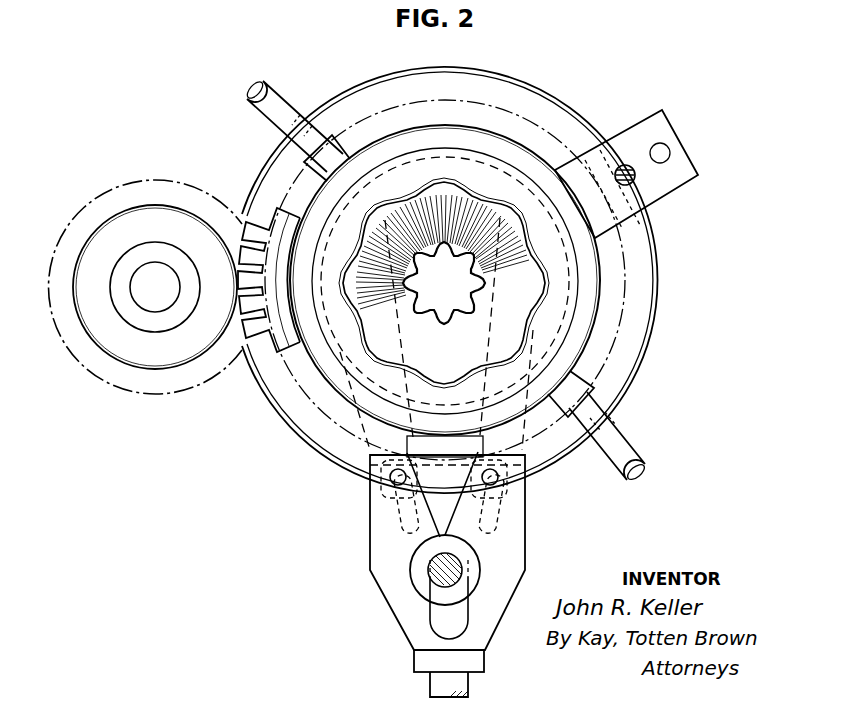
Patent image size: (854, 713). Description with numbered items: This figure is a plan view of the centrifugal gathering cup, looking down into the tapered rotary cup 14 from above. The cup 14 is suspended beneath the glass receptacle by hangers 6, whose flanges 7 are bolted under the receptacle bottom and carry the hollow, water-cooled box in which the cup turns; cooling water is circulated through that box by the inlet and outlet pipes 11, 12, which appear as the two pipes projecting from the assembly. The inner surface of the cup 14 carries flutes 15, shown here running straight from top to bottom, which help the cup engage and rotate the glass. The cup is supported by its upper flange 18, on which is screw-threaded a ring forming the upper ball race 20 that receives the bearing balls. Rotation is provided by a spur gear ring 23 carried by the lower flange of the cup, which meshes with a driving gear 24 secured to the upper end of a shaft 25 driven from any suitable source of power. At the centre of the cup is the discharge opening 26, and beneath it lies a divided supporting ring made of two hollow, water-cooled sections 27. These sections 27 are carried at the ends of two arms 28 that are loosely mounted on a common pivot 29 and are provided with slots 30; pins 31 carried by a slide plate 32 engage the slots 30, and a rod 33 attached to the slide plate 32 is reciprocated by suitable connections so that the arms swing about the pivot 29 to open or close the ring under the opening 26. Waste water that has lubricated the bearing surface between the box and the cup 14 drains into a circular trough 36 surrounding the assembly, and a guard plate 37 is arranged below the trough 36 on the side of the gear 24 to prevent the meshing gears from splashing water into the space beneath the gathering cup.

The hangers 6 is at (625, 207).
The flanges 7 is at (658, 125).
The inlet pipe 11 is at (613, 440).
The outlet pipe 12 is at (263, 115).
The rotary cup 14 is at (530, 348).
The flutes 15 is at (385, 220).
The upper flange 18 is at (557, 305).
The upper ball race 20 is at (590, 268).
The spur gear ring 23 is at (270, 353).
The driving gear 24 is at (166, 181).
The shaft 25 is at (152, 302).
The discharge opening 26 is at (472, 282).
The sections 27 is at (445, 303).
The arms 28 is at (330, 458).
The pivot 29 is at (430, 572).
The slots 30 is at (542, 507).
The pins 31 is at (566, 478).
The slide plate 32 is at (515, 538).
The rod 33 is at (430, 680).
The circular trough 36 is at (640, 330).
The guard plate 37 is at (277, 423).